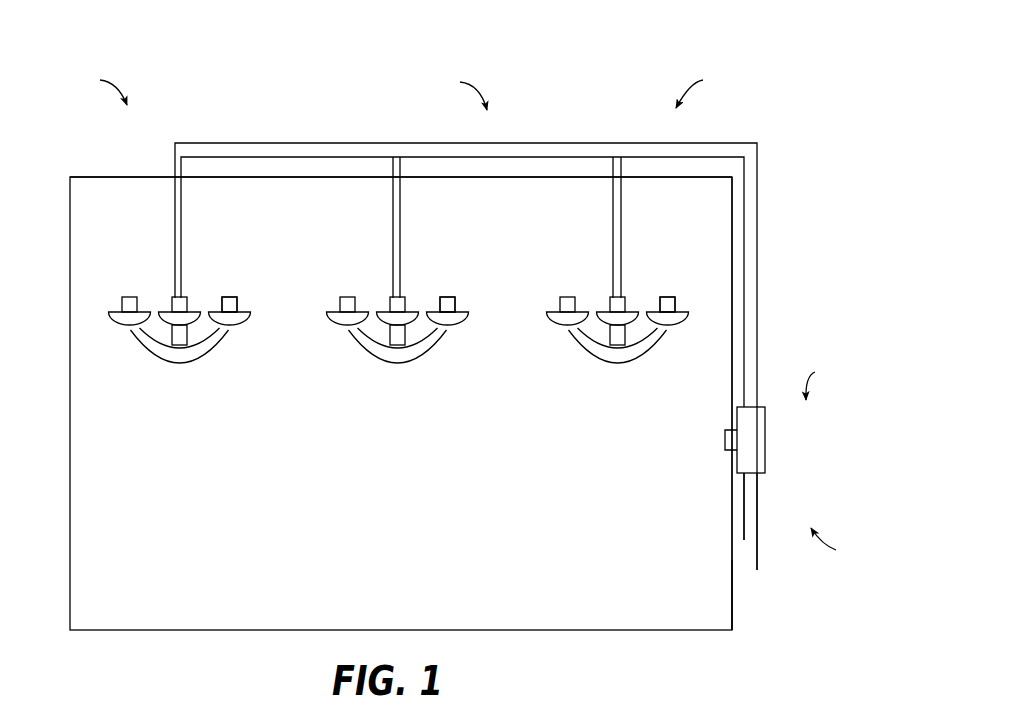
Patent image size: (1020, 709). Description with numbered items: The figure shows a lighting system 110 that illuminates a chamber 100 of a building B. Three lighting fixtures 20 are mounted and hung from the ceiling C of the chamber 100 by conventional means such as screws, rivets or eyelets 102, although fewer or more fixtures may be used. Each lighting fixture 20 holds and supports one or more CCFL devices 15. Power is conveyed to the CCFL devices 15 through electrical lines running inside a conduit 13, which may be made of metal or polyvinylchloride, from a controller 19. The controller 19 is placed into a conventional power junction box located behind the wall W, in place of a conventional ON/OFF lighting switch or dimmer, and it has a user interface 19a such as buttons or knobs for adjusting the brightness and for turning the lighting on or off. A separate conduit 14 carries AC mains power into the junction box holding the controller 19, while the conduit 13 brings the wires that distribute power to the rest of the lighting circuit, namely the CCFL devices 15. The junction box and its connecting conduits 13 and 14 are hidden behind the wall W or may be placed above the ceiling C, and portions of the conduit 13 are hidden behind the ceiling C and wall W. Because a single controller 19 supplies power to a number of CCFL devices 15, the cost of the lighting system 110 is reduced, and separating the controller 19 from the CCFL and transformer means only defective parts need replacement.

The chamber 100 is at (423, 528).
The ceiling C is at (124, 172).
The wall W is at (731, 505).
The building B is at (738, 590).
The conduit 13 is at (635, 143).
The rivets 102 is at (174, 188).
The lighting fixture 20 is at (231, 346).
The CCFL device 15 is at (228, 297).
The lighting system 110 is at (291, 450).
The controller 19 is at (769, 445).
The user interface 19a is at (724, 440).
The conduit 14 is at (757, 495).